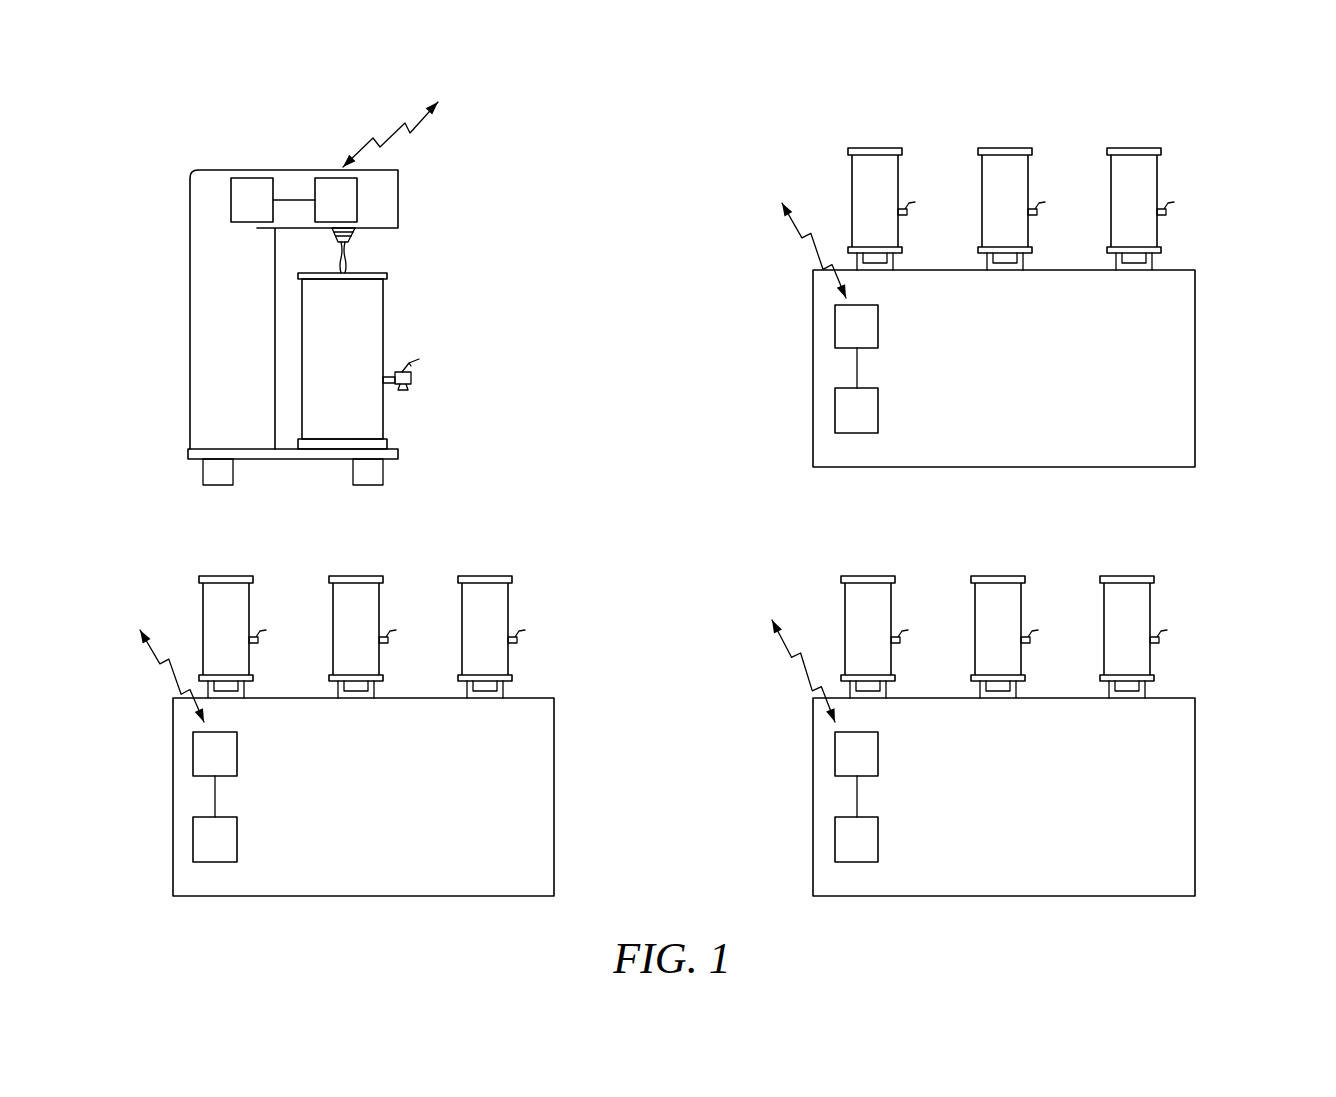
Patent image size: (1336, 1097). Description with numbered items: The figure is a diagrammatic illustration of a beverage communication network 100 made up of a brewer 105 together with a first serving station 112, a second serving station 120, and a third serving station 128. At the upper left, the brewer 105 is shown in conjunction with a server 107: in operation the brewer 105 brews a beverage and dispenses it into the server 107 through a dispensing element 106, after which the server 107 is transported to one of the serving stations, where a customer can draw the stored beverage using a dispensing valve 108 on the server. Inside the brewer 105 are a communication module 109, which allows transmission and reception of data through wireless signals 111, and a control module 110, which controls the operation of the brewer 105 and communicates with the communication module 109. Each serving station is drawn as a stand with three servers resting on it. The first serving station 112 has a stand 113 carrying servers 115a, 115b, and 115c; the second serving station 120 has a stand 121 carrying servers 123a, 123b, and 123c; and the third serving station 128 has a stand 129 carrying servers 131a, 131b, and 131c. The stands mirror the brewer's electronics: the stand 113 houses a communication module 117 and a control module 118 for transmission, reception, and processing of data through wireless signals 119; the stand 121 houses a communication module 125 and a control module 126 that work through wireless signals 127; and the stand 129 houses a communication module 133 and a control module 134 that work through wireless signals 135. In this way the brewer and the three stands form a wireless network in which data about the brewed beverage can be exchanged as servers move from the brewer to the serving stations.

The beverage communication network 100 is at (168, 155).
The brewer 105 is at (190, 322).
The dispensing element 106 is at (355, 233).
The server 107 is at (367, 337).
The dispensing valve 108 is at (418, 370).
The communication module 109 is at (357, 200).
The control module 110 is at (257, 177).
The wireless signals 111 is at (390, 133).
The first serving station 112 is at (1245, 215).
The stand 113 is at (1197, 367).
The server 115a is at (887, 178).
The server 115b is at (1017, 178).
The server 115c is at (1146, 178).
The communication module 117 is at (880, 327).
The control module 118 is at (880, 413).
The wireless signals 119 is at (790, 232).
The second serving station 120 is at (1245, 653).
The stand 121 is at (1197, 795).
The server 123a is at (880, 606).
The server 123b is at (1010, 606).
The server 123c is at (1139, 606).
The communication module 125 is at (880, 755).
The control module 126 is at (880, 840).
The wireless signals 127 is at (780, 652).
The third serving station 128 is at (549, 680).
The stand 129 is at (556, 795).
The server 131a is at (238, 606).
The server 131b is at (368, 606).
The server 131c is at (497, 606).
The communication module 133 is at (238, 755).
The control module 134 is at (238, 840).
The wireless signals 135 is at (148, 661).